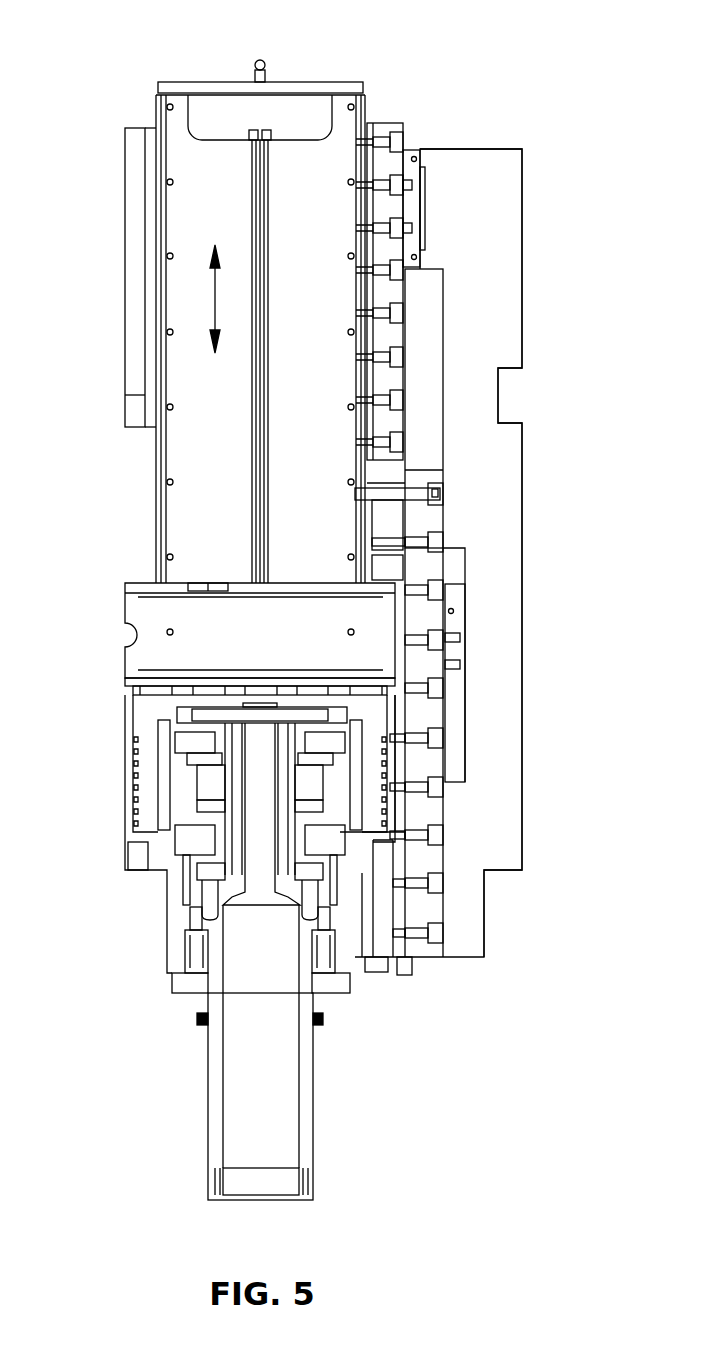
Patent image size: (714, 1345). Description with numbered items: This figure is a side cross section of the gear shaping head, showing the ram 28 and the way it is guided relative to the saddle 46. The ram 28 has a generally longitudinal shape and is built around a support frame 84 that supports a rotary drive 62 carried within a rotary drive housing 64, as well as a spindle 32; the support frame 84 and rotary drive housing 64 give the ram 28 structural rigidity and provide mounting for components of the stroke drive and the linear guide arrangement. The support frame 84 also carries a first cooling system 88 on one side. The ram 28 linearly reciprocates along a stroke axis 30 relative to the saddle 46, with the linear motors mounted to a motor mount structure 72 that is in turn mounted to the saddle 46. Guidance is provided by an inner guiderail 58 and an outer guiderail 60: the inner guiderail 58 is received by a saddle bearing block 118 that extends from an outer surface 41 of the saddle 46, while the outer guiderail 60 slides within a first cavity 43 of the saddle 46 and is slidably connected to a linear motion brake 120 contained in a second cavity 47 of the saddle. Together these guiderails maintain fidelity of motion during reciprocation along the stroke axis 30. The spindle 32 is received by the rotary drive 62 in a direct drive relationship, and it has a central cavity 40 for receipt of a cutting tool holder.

The ram 28 is at (130, 545).
The stroke axis 30 is at (215, 300).
The spindle 32 is at (313, 1082).
The central cavity 40 is at (238, 1140).
The outer surface 41 is at (403, 163).
The first cavity 43 is at (423, 378).
The saddle 46 is at (490, 162).
The second cavity 47 is at (458, 568).
The inner guiderail 58 is at (387, 128).
The outer guiderail 60 is at (432, 513).
The rotary drive 62 is at (390, 767).
The rotary drive housing 64 is at (173, 897).
The motor mount structure 72 is at (135, 205).
The support frame 84 is at (182, 133).
The first cooling system 88 is at (305, 82).
The saddle bearing block 118 is at (412, 208).
The linear motion brake 120 is at (455, 617).